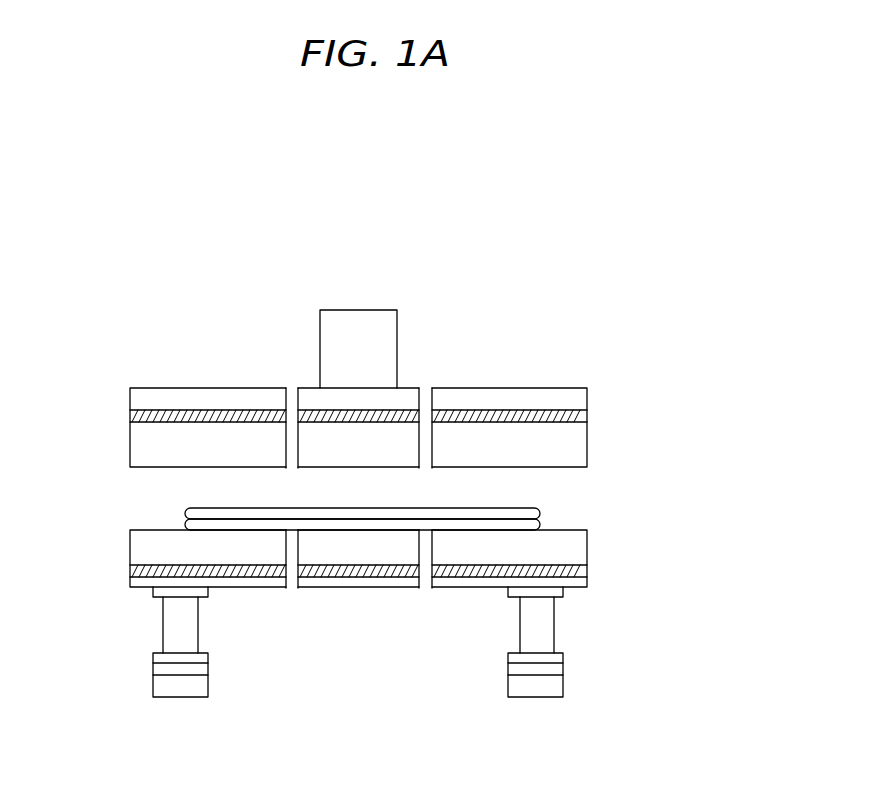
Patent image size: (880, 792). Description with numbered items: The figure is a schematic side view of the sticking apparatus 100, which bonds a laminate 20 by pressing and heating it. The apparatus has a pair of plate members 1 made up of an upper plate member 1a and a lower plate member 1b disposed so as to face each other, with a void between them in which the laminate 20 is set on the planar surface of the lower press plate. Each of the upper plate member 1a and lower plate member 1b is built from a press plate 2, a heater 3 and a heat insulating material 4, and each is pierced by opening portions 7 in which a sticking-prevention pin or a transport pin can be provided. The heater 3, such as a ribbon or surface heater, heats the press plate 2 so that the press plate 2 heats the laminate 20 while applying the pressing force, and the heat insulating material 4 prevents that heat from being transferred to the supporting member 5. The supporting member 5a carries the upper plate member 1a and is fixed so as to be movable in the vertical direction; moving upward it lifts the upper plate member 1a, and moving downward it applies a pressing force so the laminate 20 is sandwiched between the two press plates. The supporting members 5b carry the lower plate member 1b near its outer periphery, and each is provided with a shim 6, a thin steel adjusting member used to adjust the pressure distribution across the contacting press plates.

The sticking apparatus 100 is at (648, 158).
The pair of plate members 1 is at (692, 410).
The upper plate member 1a is at (636, 381).
The lower plate member 1b is at (636, 531).
The press plate 2 is at (588, 450).
The heater 3 is at (588, 414).
The heat insulating material 4 is at (588, 392).
The supporting member 5 is at (71, 272).
The supporting member 5a is at (352, 313).
The supporting member 5b is at (153, 588).
The shim 6 is at (153, 690).
The opening portion 7 is at (293, 469).
The laminate 20 is at (540, 512).